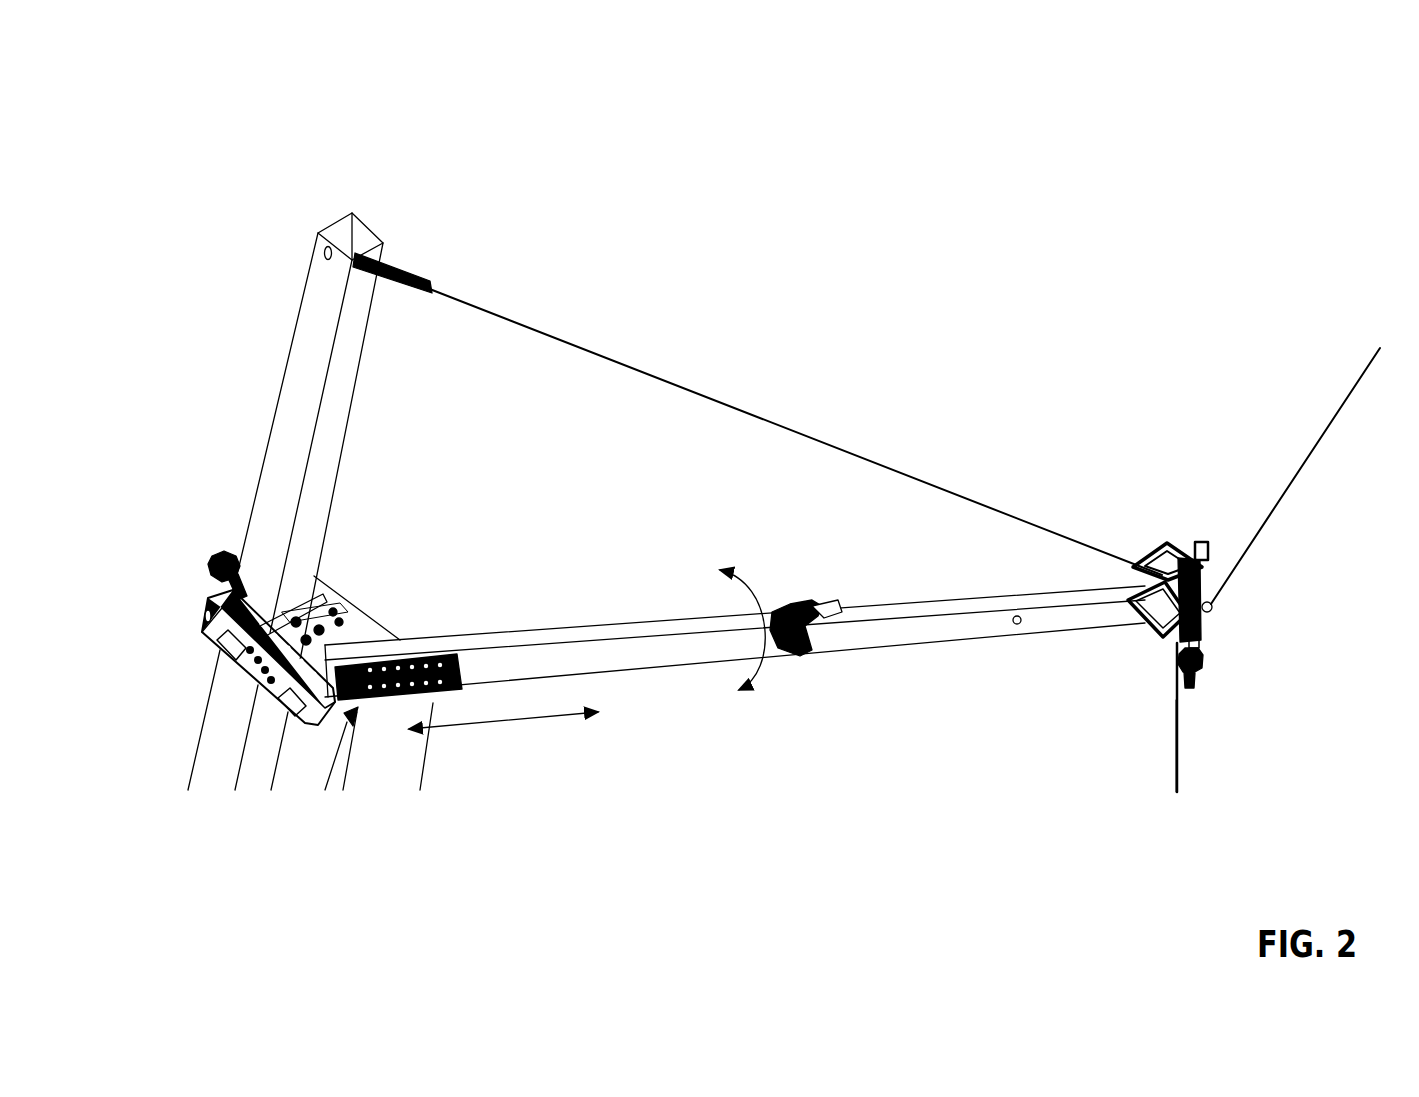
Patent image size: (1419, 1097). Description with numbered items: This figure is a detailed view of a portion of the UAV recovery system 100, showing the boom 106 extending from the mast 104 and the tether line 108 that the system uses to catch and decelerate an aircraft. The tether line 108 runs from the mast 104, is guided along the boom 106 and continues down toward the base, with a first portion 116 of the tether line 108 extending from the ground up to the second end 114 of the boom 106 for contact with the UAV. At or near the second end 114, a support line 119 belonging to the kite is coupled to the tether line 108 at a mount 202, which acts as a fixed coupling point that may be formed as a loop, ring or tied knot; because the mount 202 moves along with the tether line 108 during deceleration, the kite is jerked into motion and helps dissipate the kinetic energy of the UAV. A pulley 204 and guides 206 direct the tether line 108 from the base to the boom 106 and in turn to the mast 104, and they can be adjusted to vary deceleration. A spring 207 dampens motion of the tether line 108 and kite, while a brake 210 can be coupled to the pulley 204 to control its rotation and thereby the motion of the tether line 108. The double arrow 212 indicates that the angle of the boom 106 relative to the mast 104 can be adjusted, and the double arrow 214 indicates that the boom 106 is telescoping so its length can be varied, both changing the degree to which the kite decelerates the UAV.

The UAV recovery system 100 is at (364, 96).
The mast 104 is at (287, 445).
The boom 106 is at (545, 657).
The tether line 108 is at (765, 418).
The second end of the boom 114 is at (1180, 553).
The first portion of the tether line 116 is at (1177, 774).
The support line 119 is at (1342, 405).
The mount 202 is at (1213, 613).
The pulley 204 is at (1195, 676).
The guides 206 is at (1178, 550).
The spring 207 is at (1200, 640).
The brake 210 is at (1205, 540).
The double arrow 212 is at (765, 582).
The double arrow 214 is at (548, 718).